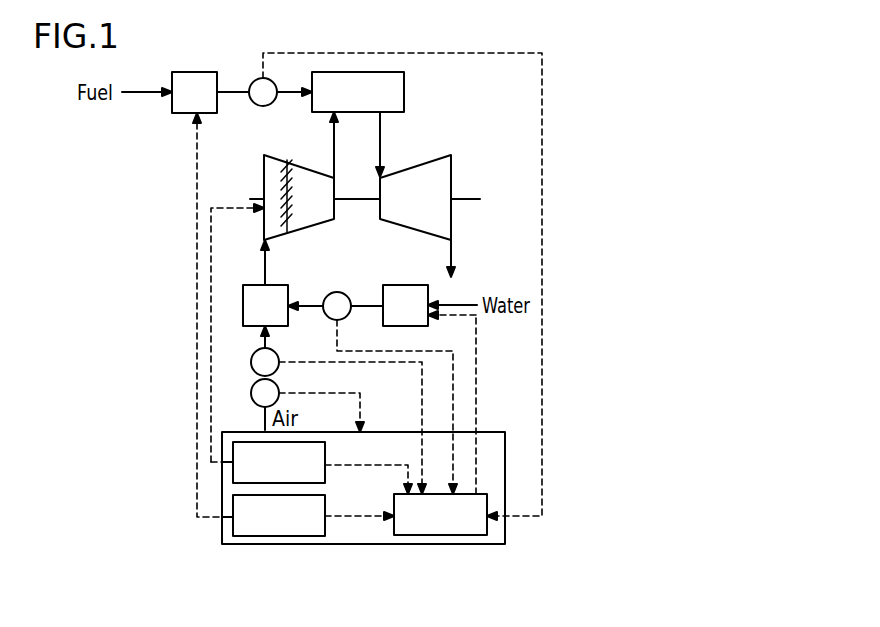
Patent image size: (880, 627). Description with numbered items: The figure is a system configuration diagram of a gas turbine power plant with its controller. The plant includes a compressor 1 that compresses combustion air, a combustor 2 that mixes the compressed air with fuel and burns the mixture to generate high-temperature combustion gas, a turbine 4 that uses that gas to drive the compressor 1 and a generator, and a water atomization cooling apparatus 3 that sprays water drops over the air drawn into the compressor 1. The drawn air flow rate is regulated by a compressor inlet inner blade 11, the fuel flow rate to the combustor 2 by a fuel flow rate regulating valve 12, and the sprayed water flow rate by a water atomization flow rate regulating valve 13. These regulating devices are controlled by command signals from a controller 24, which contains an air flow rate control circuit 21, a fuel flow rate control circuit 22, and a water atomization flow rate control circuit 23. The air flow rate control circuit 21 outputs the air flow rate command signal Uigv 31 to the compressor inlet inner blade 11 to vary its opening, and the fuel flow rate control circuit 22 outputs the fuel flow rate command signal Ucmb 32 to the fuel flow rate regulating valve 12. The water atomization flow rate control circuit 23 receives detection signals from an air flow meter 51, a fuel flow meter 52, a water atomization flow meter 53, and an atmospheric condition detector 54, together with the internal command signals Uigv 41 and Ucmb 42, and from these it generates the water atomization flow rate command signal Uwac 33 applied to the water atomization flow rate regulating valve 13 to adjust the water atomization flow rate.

The compressor 1 is at (264, 171).
The combustor 2 is at (404, 92).
The water atomization cooling apparatus 3 is at (248, 285).
The turbine 4 is at (451, 168).
The compressor inlet inner blade 11 is at (287, 232).
The fuel flow rate regulating valve 12 is at (194, 74).
The water atomization flow rate regulating valve 13 is at (406, 285).
The air flow rate control circuit 21 is at (310, 442).
The fuel flow rate control circuit 22 is at (295, 536).
The water atomization flow rate control circuit 23 is at (445, 535).
The controller 24 is at (372, 544).
The air flow rate command signal Uigv 31 is at (220, 418).
The fuel flow rate command signal Ucmb 32 is at (171, 500).
The water atomization flow rate command signal Uwac 33 is at (503, 409).
The air flow rate command signal Uigv 41 is at (370, 452).
The fuel flow rate command signal Ucmb 42 is at (354, 483).
The air flow meter 51 is at (279, 368).
The fuel flow meter 52 is at (254, 84).
The water atomization flow meter 53 is at (337, 292).
The atmospheric condition detector 54 is at (252, 392).